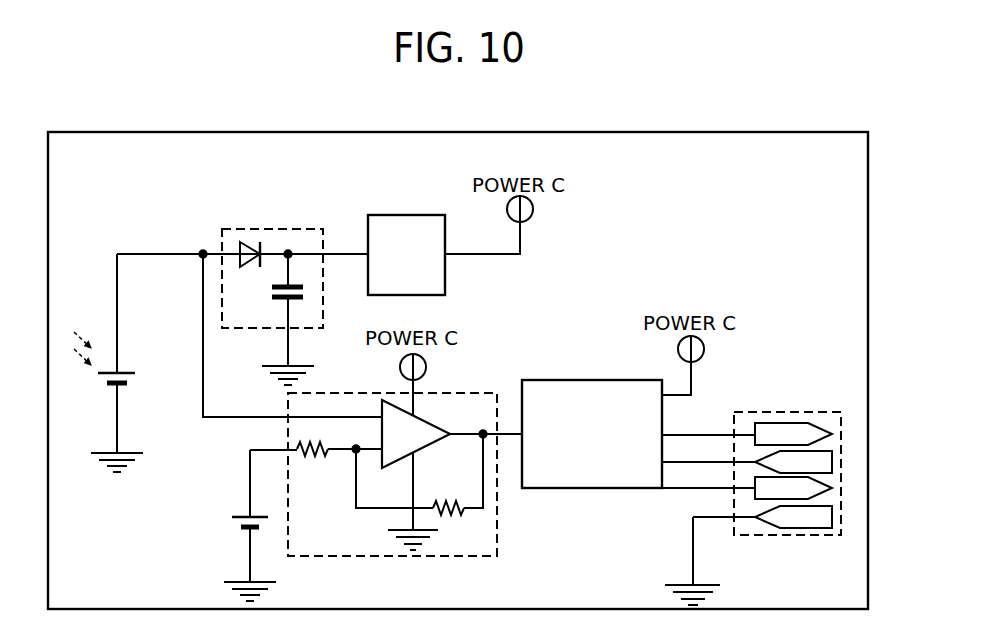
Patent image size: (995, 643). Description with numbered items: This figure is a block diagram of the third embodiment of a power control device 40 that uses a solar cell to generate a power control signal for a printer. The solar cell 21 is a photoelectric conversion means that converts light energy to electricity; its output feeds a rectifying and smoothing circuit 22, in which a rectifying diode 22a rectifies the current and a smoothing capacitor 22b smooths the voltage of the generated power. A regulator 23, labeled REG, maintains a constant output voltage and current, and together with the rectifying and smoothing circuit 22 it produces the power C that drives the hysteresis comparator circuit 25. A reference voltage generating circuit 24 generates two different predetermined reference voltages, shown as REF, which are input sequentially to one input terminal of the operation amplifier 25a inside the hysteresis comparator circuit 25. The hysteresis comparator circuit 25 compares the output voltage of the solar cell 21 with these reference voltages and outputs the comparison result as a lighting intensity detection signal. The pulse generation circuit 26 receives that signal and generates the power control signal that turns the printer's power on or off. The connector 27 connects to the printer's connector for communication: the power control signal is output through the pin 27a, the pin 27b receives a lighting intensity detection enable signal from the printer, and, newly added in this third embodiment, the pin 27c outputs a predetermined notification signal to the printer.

The power control device 40 is at (290, 131).
The solar cell 21 is at (99, 391).
The rectifying and smoothing circuit 22 is at (300, 260).
The rectifying diode 22a is at (250, 269).
The smoothing capacitor 22b is at (309, 293).
The regulator 23 is at (372, 213).
The reference voltage generating circuit 24 is at (239, 534).
The hysteresis comparator circuit 25 is at (392, 456).
The operation amplifier 25a is at (419, 450).
The pulse generation circuit 26 is at (548, 380).
The connector 27 is at (765, 480).
The pin 27a is at (787, 422).
The pin 27b is at (749, 461).
The pin 27c is at (749, 488).